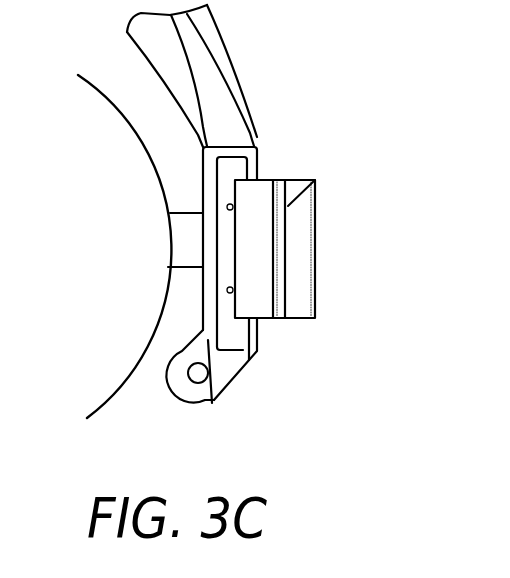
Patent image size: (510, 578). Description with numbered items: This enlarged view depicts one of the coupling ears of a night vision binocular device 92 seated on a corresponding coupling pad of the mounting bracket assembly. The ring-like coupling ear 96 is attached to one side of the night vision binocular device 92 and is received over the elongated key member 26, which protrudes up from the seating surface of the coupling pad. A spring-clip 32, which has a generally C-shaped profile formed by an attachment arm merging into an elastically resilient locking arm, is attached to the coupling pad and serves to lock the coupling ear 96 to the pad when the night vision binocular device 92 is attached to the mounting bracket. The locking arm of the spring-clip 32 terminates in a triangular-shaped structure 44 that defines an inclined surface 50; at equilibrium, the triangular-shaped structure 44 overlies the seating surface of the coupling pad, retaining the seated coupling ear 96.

The elongated key member 26 is at (222, 336).
The spring-clip 32 is at (322, 328).
The triangular-shaped structure 44 is at (305, 180).
The inclined surface 50 is at (262, 193).
The night vision binocular device 92 is at (103, 407).
The coupling ear 96 is at (212, 403).